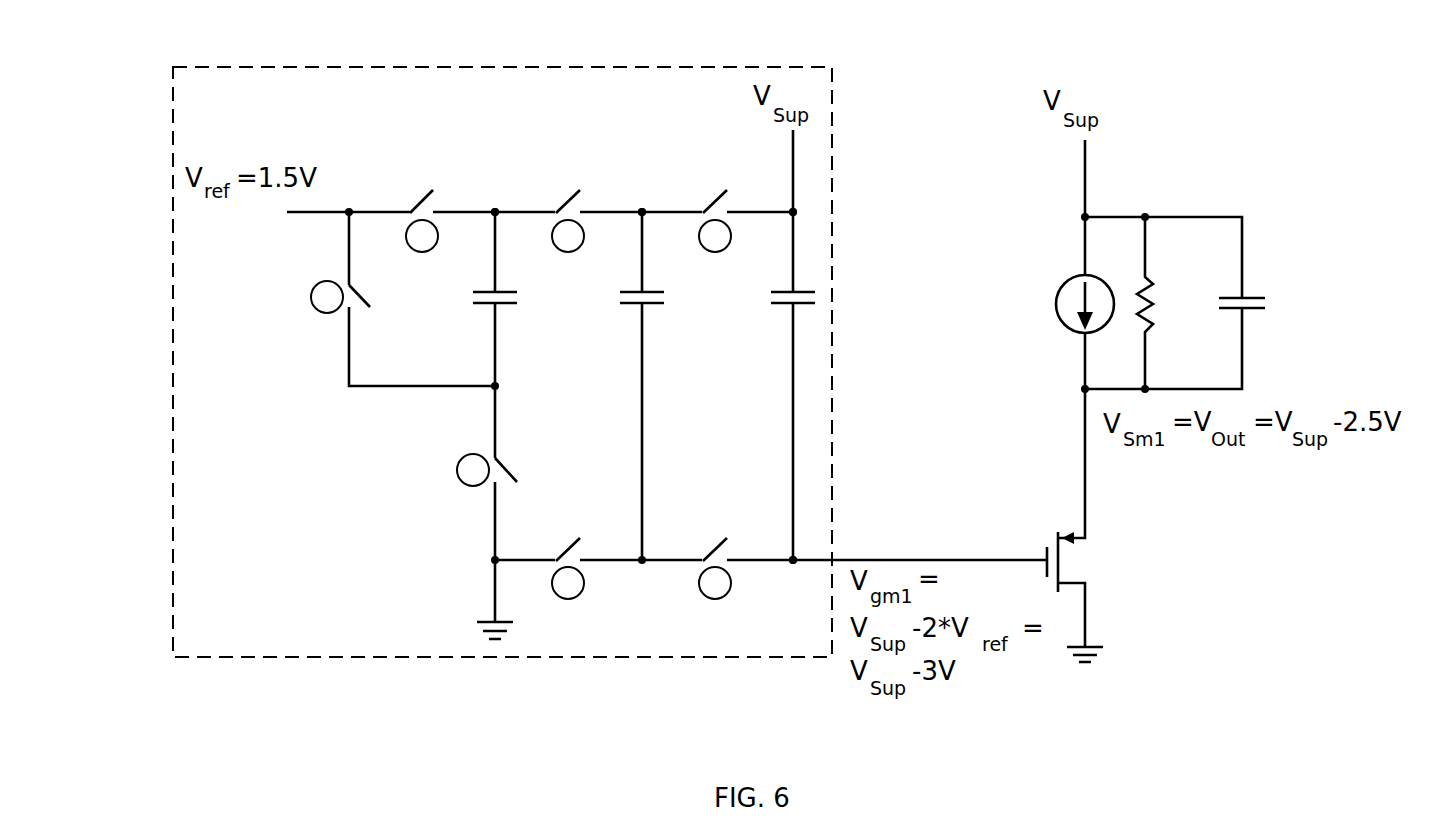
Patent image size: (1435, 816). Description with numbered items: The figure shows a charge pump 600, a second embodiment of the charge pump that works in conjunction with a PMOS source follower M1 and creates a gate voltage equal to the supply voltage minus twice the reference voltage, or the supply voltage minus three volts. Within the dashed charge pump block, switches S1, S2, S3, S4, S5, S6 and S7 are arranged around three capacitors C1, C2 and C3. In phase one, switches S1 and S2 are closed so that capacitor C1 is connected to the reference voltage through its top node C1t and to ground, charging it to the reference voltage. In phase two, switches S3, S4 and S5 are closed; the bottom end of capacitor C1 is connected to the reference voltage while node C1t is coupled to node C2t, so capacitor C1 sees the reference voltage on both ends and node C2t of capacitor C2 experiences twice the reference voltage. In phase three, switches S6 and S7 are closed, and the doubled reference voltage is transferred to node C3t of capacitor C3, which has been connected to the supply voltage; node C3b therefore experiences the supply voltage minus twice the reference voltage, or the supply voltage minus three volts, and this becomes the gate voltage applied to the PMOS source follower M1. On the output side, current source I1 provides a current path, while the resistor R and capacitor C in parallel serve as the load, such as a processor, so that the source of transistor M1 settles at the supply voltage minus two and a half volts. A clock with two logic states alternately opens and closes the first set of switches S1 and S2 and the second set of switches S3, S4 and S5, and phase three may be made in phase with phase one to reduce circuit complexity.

The charge pump 600 is at (372, 690).
The switch S1 is at (418, 200).
The switch S2 is at (506, 472).
The switch S3 is at (362, 295).
The switch S4 is at (565, 200).
The switch S5 is at (565, 548).
The switch S6 is at (712, 548).
The switch S7 is at (712, 202).
The capacitor C1 is at (484, 310).
The capacitor C2 is at (631, 310).
The capacitor C3 is at (781, 310).
The node C1t is at (495, 208).
The node C2t is at (641, 208).
The node C3t is at (790, 210).
The node C3b is at (793, 565).
The current source I1 is at (1056, 304).
The resistor R is at (1158, 302).
The capacitor C is at (1268, 302).
The PMOS source follower M1 is at (1078, 561).